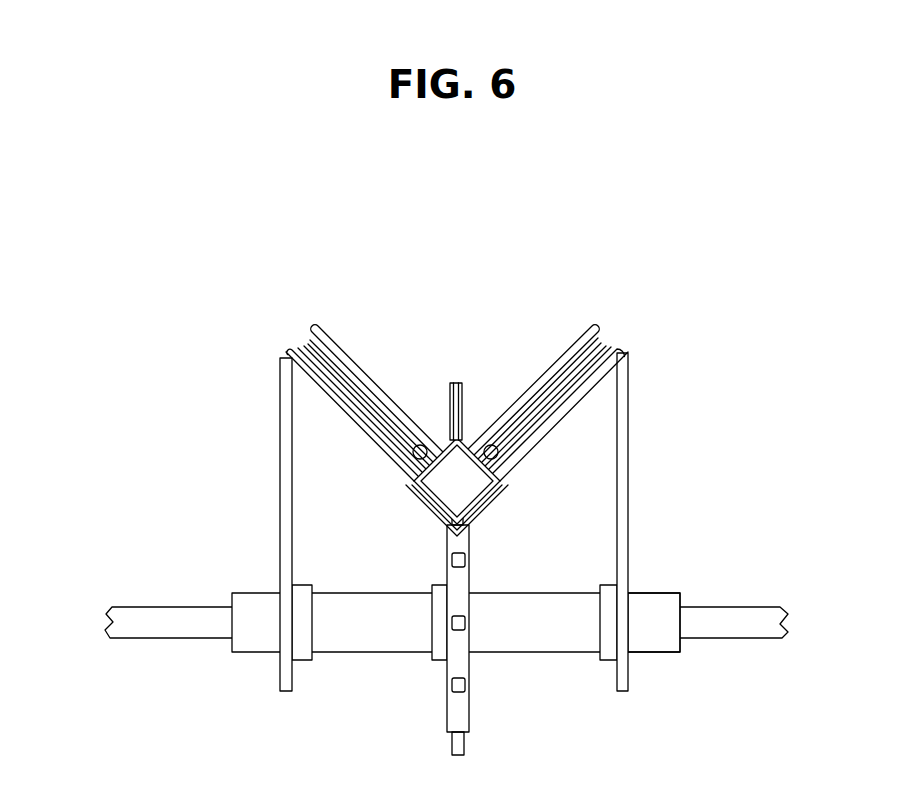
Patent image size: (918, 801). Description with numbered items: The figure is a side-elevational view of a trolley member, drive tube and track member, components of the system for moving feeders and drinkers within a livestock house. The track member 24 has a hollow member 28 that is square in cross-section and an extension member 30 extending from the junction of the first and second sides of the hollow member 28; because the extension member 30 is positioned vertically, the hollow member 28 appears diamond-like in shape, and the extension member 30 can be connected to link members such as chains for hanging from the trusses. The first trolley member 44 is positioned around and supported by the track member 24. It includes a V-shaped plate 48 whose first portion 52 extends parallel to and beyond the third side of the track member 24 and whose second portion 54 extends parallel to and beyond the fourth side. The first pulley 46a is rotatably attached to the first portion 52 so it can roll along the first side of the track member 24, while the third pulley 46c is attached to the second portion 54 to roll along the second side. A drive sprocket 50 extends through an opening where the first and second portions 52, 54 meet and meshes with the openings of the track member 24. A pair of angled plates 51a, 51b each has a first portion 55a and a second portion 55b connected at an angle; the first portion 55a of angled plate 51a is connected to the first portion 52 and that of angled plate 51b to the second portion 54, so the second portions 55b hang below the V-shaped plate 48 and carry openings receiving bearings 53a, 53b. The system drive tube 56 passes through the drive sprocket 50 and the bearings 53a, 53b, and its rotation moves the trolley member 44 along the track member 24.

The track member 24 is at (463, 395).
The hollow member 28 is at (473, 437).
The extension member 30 is at (448, 440).
The first trolley member 44 is at (655, 394).
The first pulley 46a is at (330, 370).
The third pulley 46c is at (597, 328).
The V-shaped plate 48 is at (480, 508).
The drive sprocket 50 is at (460, 712).
The angled plate 51a is at (283, 462).
The angled plate 51b is at (624, 465).
The first portion of V-shaped plate 52 is at (292, 356).
The bearing 53a is at (263, 636).
The bearing 53b is at (650, 645).
The second portion of V-shaped plate 54 is at (623, 350).
The first portion of angled plate 55a is at (382, 460).
The second portion of angled plate 55b is at (291, 552).
The system drive tube 56 is at (185, 623).